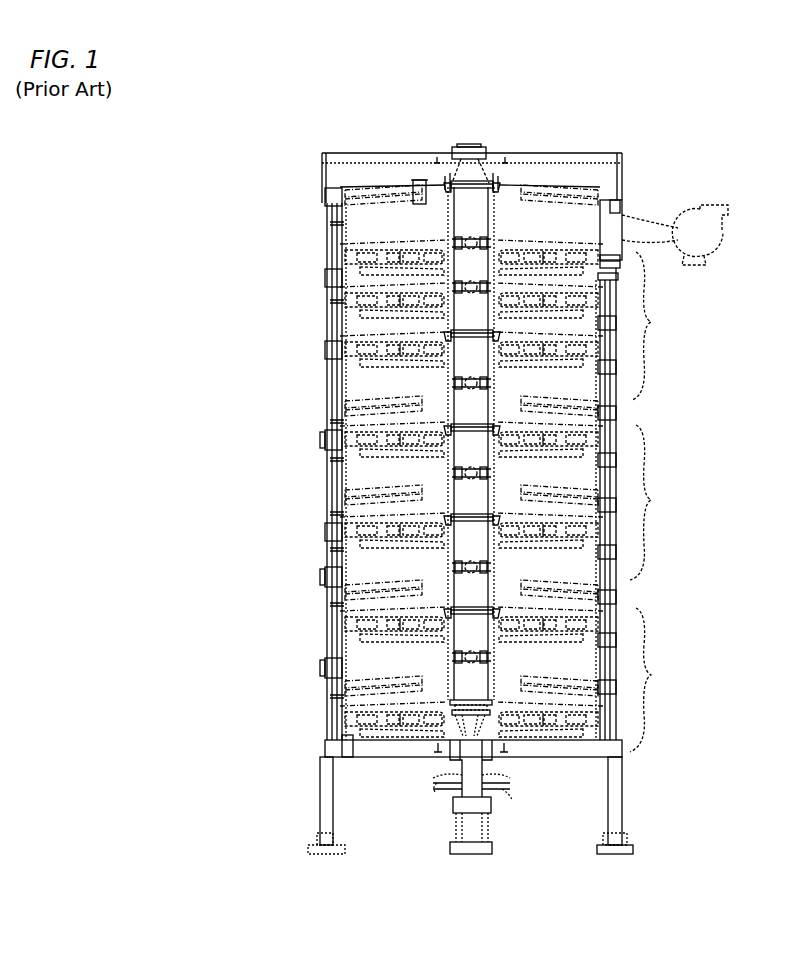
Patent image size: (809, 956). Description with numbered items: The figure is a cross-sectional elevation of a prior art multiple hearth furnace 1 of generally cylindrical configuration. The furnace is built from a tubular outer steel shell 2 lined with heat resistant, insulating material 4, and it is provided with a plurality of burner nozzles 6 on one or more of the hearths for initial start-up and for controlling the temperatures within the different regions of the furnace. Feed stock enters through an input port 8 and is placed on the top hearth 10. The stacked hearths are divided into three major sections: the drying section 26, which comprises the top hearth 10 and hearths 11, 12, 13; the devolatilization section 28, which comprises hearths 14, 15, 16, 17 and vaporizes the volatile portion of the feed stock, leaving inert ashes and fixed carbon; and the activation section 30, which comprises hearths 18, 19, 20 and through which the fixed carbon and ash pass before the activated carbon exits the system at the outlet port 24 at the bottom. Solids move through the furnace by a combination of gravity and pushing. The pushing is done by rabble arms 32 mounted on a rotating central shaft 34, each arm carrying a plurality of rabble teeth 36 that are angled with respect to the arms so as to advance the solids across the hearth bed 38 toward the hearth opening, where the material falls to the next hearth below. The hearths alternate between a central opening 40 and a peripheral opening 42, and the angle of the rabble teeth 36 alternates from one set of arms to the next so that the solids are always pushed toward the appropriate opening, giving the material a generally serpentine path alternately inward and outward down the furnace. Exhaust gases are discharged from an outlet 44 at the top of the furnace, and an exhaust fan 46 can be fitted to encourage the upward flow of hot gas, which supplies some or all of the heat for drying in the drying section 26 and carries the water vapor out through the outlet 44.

The multiple hearth furnace 1 is at (636, 157).
The tubular outer steel shell 2 is at (330, 395).
The heat resistant insulating material 4 is at (330, 258).
The burner nozzles 6 is at (335, 437).
The input port 8 is at (418, 182).
The top hearth 10 is at (375, 242).
The hearth 11 is at (622, 276).
The hearth 12 is at (585, 333).
The hearth 13 is at (585, 390).
The hearth 14 is at (590, 430).
The hearth 15 is at (585, 480).
The hearth 16 is at (585, 523).
The hearth 17 is at (585, 575).
The hearth 18 is at (585, 620).
The hearth 19 is at (590, 695).
The hearth 20 is at (600, 705).
The outlet port 24 is at (352, 755).
The drying section 26 is at (657, 326).
The devolatilization section 28 is at (656, 502).
The activation section 30 is at (657, 680).
The rabble arms 32 is at (330, 605).
The central shaft 34 is at (471, 150).
The rabble teeth 36 is at (325, 640).
The hearth bed 38 is at (430, 325).
The central opening 40 is at (445, 328).
The peripheral opening 42 is at (355, 475).
The exhaust gas outlet 44 is at (637, 212).
The exhaust fan 46 is at (722, 227).